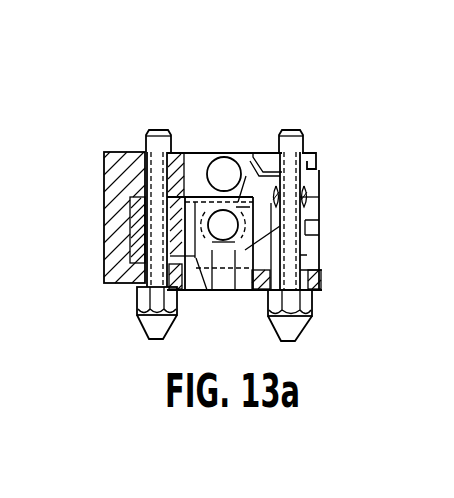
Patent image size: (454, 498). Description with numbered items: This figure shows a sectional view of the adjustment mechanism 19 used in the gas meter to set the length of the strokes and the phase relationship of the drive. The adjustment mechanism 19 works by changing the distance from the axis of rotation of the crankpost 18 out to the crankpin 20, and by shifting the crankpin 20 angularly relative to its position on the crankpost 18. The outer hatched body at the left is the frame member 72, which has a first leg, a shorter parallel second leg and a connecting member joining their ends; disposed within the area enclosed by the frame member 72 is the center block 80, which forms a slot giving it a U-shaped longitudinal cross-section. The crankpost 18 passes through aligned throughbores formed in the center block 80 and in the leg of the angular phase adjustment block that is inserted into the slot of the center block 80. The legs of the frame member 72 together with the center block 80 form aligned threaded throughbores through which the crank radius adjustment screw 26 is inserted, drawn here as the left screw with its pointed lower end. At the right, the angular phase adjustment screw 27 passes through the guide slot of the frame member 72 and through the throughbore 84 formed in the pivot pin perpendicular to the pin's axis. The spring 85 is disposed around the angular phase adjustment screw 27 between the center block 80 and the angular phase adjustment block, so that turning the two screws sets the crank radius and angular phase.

The crankpost 18 is at (243, 233).
The adjustment mechanism 19 is at (322, 123).
The crankpin 20 is at (213, 152).
The crank radius adjustment screw 26 is at (142, 318).
The angular phase adjustment screw 27 is at (305, 329).
The frame member 72 is at (104, 219).
The center block 80 is at (318, 176).
The throughbore 84 is at (303, 223).
The spring 85 is at (303, 256).